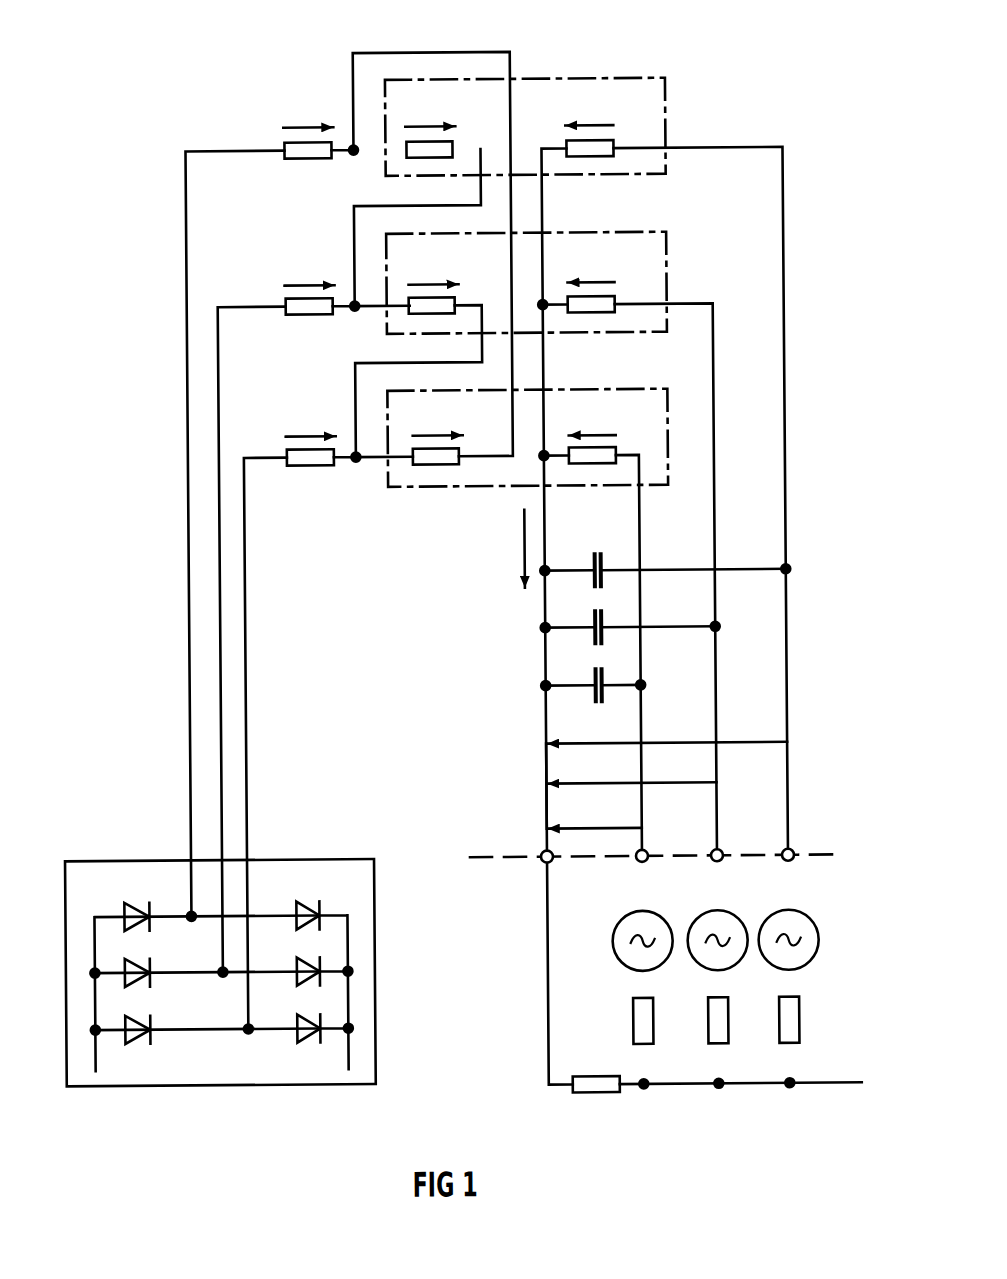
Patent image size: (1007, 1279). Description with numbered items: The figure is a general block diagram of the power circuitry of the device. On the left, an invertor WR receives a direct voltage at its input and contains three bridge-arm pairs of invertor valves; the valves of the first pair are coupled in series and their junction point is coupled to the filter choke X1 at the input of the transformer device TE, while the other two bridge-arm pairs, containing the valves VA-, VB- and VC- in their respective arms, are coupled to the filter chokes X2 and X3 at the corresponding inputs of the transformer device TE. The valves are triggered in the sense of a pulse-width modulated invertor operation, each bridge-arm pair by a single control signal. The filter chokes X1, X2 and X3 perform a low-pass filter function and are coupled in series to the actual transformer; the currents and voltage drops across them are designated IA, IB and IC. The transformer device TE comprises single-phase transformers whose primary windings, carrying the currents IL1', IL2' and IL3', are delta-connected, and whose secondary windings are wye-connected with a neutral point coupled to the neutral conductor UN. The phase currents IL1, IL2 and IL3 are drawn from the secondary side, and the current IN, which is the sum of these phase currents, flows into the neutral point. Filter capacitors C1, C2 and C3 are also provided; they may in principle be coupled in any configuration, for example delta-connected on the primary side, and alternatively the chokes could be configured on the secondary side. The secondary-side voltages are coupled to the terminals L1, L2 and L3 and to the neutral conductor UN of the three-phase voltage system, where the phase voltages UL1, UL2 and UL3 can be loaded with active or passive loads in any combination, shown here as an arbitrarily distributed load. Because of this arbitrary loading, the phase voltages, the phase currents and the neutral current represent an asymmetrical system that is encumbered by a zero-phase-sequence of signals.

The transformer device TE is at (584, 54).
The current through filter choke X1 IA is at (308, 110).
The current through filter choke X2 IB is at (309, 268).
The current through filter choke X3 IC is at (310, 419).
The primary winding current of line L1 IL1' is at (430, 124).
The primary winding current of line L2 IL2' is at (433, 281).
The primary winding current of line L3 IL3' is at (437, 433).
The phase current IL1 is at (589, 123).
The phase current IL2 is at (590, 280).
The phase current IL3 is at (591, 432).
The filter choke X1 is at (319, 158).
The filter choke X2 is at (319, 314).
The filter choke X3 is at (319, 465).
The neutral current IN is at (507, 549).
The filter capacitor C1 is at (594, 528).
The filter capacitor C2 is at (597, 608).
The filter capacitor C3 is at (597, 665).
The phase voltage UL1 is at (623, 741).
The phase voltage UL2 is at (623, 781).
The phase voltage UL3 is at (623, 826).
The neutral conductor UN is at (545, 800).
The terminal L1 is at (789, 850).
The terminal L2 is at (718, 850).
The terminal L3 is at (643, 850).
The invertor WR is at (219, 938).
The invertor valve VA- is at (294, 906).
The invertor valve VB- is at (294, 963).
The invertor valve VC- is at (294, 1020).